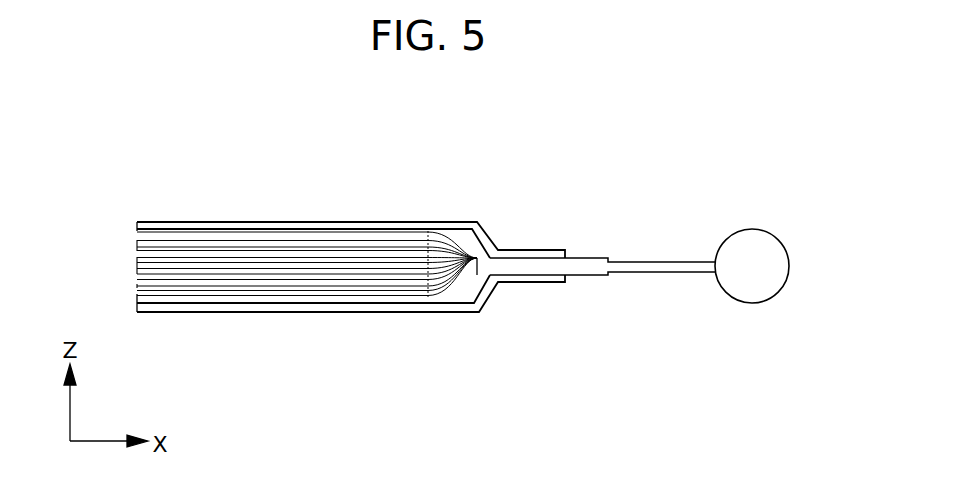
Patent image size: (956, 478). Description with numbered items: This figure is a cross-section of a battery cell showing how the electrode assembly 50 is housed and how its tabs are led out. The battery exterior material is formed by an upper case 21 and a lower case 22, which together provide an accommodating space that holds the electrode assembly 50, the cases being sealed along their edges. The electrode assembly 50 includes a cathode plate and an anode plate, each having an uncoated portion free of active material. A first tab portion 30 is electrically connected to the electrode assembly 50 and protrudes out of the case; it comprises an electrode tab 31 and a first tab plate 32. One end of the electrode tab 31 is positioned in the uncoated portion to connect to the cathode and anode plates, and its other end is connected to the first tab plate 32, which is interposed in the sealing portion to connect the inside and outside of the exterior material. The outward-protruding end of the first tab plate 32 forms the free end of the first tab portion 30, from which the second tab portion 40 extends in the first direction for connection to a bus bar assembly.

The upper case 21 is at (267, 221).
The lower case 22 is at (267, 313).
The first tab portion 30 is at (587, 199).
The electrode tab 31 is at (460, 229).
The first tab plate 32 is at (470, 170).
The second tab portion 40 is at (767, 227).
The electrode assembly 50 is at (367, 229).